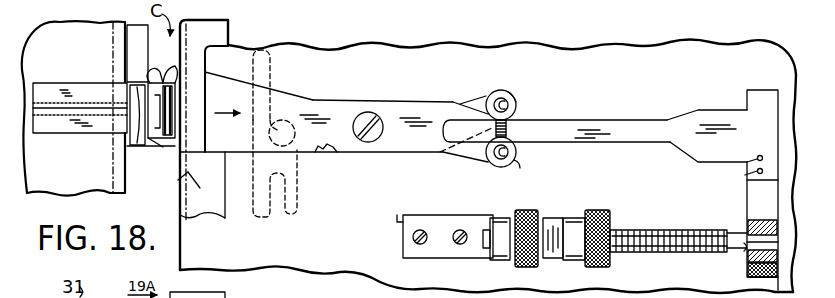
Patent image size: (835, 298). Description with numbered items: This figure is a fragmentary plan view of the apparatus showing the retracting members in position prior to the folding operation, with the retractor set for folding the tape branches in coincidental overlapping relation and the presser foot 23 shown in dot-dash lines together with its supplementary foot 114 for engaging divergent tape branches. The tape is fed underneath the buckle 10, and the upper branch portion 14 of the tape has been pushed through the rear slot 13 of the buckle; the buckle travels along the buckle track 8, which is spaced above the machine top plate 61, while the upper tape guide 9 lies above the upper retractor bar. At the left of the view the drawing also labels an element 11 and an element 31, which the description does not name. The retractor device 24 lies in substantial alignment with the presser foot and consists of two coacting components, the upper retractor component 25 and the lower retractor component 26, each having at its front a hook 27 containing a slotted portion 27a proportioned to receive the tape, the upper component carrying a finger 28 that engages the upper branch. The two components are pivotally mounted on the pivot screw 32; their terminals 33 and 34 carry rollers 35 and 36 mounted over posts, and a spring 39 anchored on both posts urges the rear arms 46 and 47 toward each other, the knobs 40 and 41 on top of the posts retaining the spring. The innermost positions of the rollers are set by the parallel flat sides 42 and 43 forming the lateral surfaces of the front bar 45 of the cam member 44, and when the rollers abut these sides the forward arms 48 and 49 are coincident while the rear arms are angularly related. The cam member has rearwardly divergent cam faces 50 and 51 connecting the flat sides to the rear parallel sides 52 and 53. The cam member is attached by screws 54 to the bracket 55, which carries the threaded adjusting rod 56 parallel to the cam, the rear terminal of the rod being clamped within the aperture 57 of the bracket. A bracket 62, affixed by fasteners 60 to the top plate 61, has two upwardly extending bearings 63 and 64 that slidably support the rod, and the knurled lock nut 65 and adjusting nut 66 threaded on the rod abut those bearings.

The buckle track 8 is at (210, 216).
The upper tape guide 9 is at (193, 178).
The buckle 10 is at (137, 147).
The blade 11 is at (87, 88).
The rear slot 13 is at (188, 86).
The upper branch portion 14 is at (173, 117).
The presser foot 23 is at (295, 178).
The retractor device 24 is at (372, 101).
The upper retractor component 25 is at (456, 162).
The lower retractor component 26 is at (458, 102).
The hook 27 is at (165, 152).
The slotted portion 27a is at (160, 80).
The finger 28 is at (147, 82).
The body 31 is at (84, 184).
The pivot screw 32 is at (370, 142).
The terminal 33 is at (517, 160).
The terminal 34 is at (517, 105).
The roller 35 is at (492, 166).
The roller 36 is at (500, 92).
The spring 39 is at (510, 128).
The knob 40 is at (505, 167).
The knob 41 is at (510, 95).
The flat side 42 is at (600, 143).
The flat side 43 is at (626, 123).
The cam member 44 is at (658, 121).
The front bar 45 is at (582, 122).
The rear arm 46 is at (472, 160).
The rear arm 47 is at (478, 96).
The forward arm 48 is at (304, 100).
The forward arm 49 is at (330, 152).
The cam face 50 is at (678, 153).
The cam face 51 is at (686, 112).
The rear parallel side 52 is at (731, 163).
The rear parallel side 53 is at (721, 108).
The screws 54 is at (755, 172).
The bracket 55 is at (753, 203).
The threaded adjusting rod 56 is at (658, 230).
The aperture 57 is at (743, 250).
The fasteners 60 is at (422, 244).
The machine top plate 61 is at (340, 250).
The bracket 62 is at (403, 222).
The bearing 63 is at (498, 219).
The bearing 64 is at (572, 219).
The lock nut 65 is at (608, 214).
The adjusting nut 66 is at (527, 263).
The supplementary foot 114 is at (268, 70).